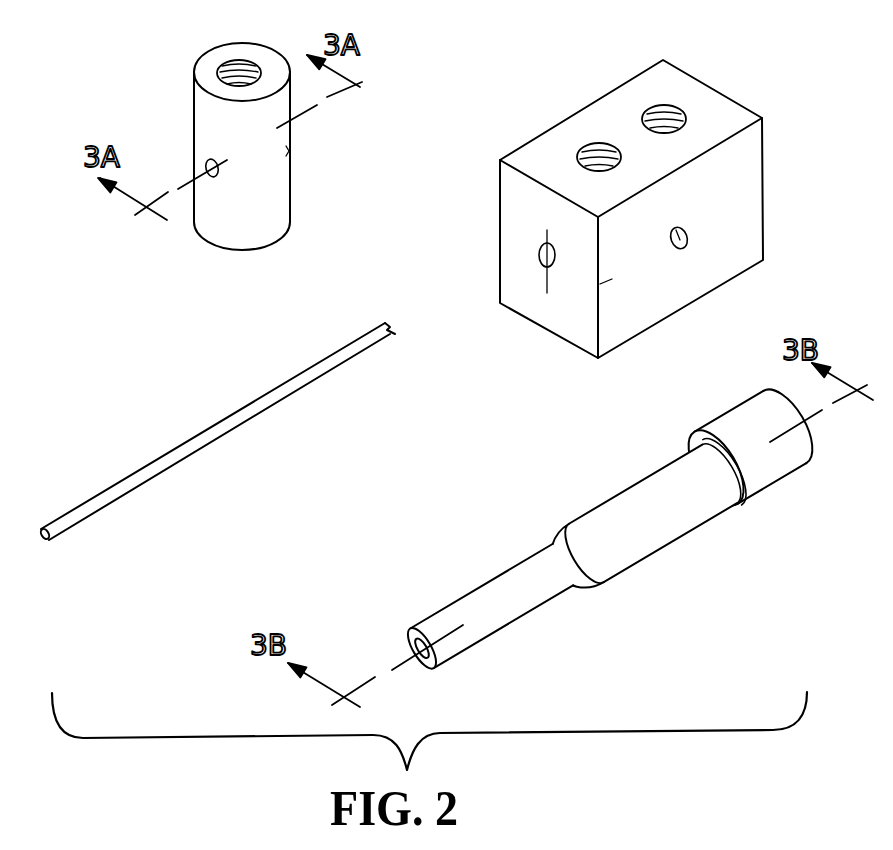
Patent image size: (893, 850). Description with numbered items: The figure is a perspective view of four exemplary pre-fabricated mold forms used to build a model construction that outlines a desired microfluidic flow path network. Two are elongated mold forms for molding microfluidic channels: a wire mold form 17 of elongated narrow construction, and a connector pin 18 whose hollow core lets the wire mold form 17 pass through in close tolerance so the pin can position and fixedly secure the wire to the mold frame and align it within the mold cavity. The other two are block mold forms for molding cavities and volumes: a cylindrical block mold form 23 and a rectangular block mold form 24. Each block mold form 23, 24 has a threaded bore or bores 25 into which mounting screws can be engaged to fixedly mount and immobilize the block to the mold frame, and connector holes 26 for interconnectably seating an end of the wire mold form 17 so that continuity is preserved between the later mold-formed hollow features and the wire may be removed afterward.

The wire mold form 17 is at (192, 438).
The connector pin 18 is at (580, 473).
The cylindrical block mold form 23 is at (270, 190).
The rectangular block mold form 24 is at (723, 110).
The threaded bore 25 is at (247, 67).
The connector hole 26 is at (207, 163).